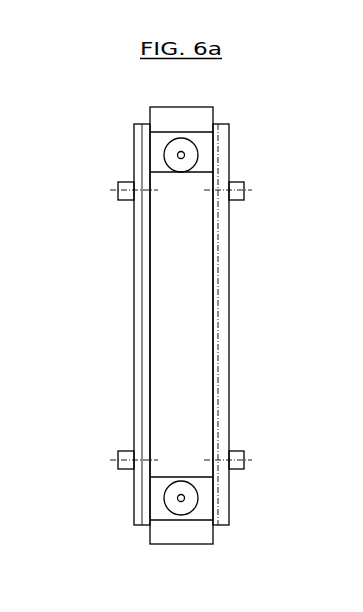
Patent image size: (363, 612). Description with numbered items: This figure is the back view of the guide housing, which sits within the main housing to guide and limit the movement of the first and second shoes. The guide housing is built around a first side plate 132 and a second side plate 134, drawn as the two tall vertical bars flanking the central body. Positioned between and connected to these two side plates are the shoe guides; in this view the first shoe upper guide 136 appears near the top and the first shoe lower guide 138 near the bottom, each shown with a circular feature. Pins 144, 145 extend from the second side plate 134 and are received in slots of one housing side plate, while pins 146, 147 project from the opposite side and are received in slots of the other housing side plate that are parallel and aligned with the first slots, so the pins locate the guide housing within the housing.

The first side plate 132 is at (136, 334).
The second side plate 134 is at (223, 316).
The first shoe upper guide 136 is at (205, 140).
The first shoe lower guide 138 is at (205, 513).
The pin 144 is at (245, 200).
The pin 145 is at (244, 452).
The pin 146 is at (118, 200).
The pin 147 is at (118, 470).